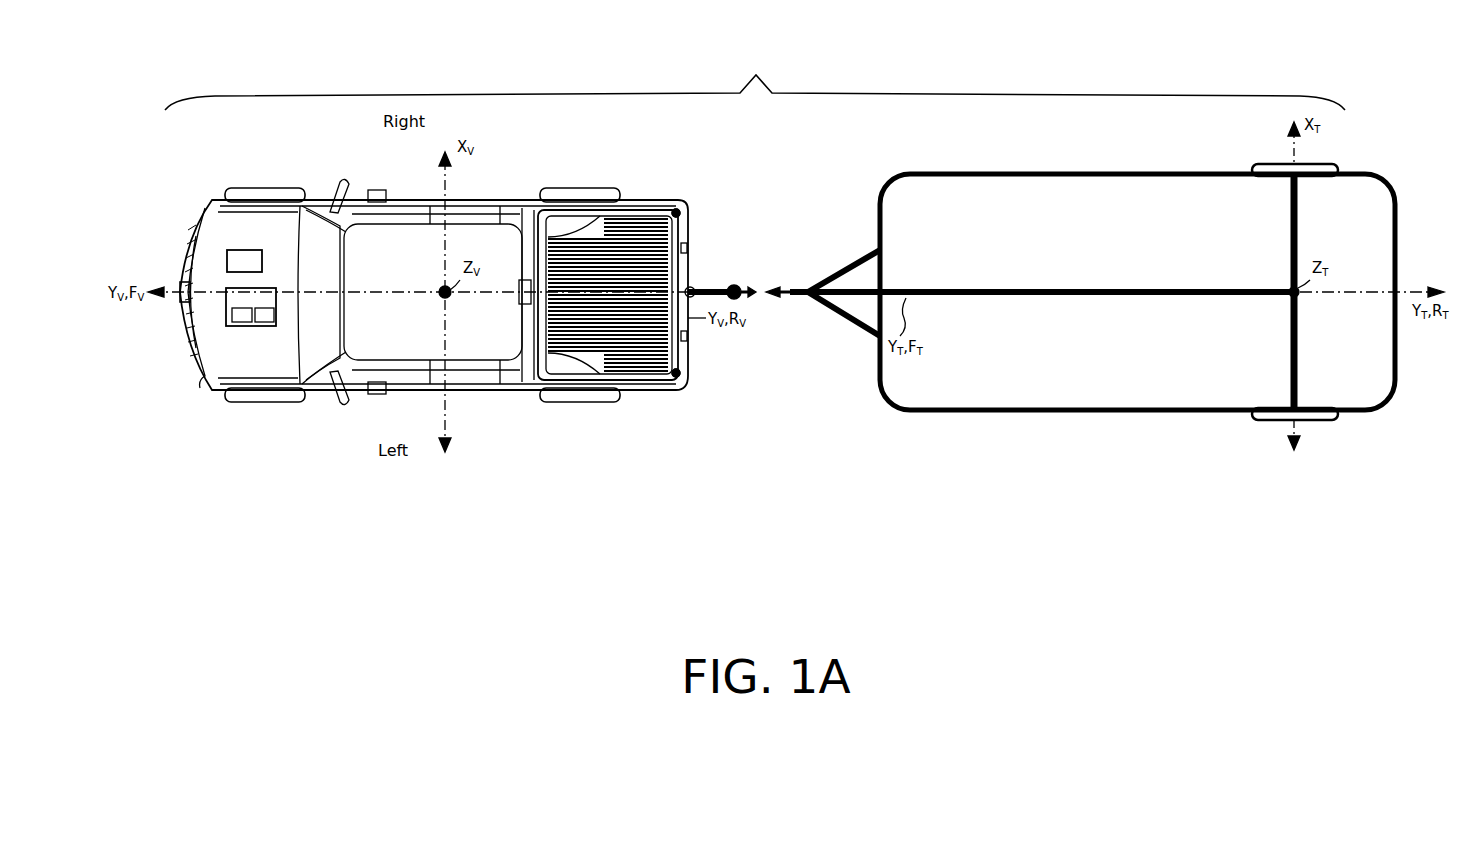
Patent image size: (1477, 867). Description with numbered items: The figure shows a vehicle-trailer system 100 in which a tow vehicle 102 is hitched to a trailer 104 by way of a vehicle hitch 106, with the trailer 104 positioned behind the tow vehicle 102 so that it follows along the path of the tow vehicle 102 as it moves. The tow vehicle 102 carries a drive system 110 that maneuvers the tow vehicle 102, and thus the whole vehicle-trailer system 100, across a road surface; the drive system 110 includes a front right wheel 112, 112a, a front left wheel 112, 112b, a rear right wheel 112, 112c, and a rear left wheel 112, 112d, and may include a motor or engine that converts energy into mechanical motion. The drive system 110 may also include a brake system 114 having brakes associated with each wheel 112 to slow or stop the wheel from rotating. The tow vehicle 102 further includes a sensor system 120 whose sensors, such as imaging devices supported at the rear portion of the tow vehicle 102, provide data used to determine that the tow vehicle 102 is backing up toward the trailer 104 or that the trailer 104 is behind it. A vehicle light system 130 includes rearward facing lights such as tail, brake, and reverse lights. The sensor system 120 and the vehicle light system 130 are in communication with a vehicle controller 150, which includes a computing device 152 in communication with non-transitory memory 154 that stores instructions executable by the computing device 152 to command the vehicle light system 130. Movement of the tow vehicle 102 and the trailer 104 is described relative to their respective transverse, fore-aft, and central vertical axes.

The vehicle-trailer system 100 is at (755, 79).
The tow vehicle 102 is at (210, 205).
The trailer 104 is at (1080, 292).
The vehicle hitch 106 is at (738, 286).
The drive system 110 is at (781, 283).
The wheel 112 is at (781, 283).
The front right wheel 112a is at (282, 188).
The front left wheel 112b is at (278, 400).
The rear right wheel 112c is at (1266, 165).
The rear left wheel 112d is at (592, 400).
The brake system 114 is at (246, 250).
The sensor system 120 is at (377, 190).
The vehicle light system 130 is at (182, 286).
The vehicle controller 150 is at (251, 325).
The computing device 152 is at (242, 322).
The non-transitory memory 154 is at (264, 322).